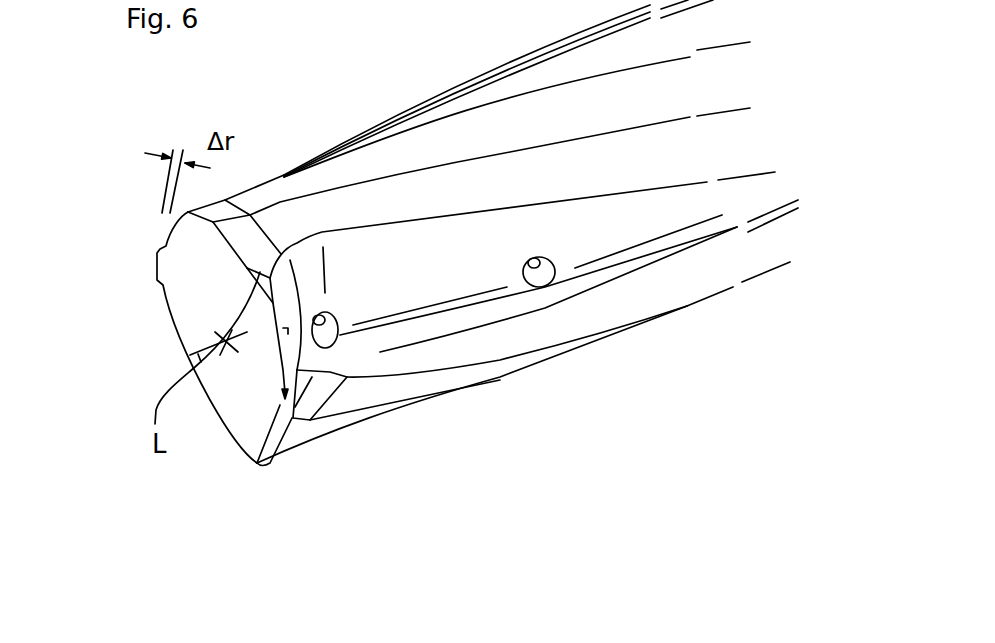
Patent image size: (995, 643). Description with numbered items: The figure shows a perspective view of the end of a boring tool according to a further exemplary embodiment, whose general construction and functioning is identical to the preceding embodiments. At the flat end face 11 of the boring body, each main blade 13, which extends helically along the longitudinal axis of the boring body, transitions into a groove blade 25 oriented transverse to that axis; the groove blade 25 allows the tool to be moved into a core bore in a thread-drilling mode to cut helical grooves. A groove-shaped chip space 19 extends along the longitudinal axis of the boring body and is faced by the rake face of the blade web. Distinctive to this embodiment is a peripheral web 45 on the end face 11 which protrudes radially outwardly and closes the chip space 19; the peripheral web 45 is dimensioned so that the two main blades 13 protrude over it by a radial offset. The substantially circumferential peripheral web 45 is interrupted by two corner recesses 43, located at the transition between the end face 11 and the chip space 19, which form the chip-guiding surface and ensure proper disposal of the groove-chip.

The end face 11 is at (188, 286).
The main blade 13 is at (152, 249).
The chip space 19 is at (400, 278).
The groove blade 25 is at (148, 265).
The corner recess 43 is at (257, 464).
The peripheral web 45 is at (252, 300).